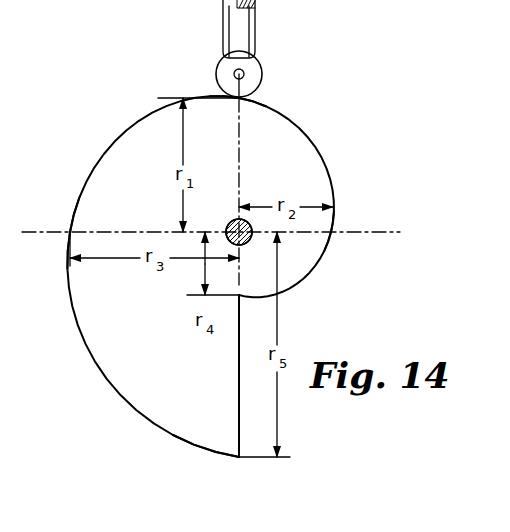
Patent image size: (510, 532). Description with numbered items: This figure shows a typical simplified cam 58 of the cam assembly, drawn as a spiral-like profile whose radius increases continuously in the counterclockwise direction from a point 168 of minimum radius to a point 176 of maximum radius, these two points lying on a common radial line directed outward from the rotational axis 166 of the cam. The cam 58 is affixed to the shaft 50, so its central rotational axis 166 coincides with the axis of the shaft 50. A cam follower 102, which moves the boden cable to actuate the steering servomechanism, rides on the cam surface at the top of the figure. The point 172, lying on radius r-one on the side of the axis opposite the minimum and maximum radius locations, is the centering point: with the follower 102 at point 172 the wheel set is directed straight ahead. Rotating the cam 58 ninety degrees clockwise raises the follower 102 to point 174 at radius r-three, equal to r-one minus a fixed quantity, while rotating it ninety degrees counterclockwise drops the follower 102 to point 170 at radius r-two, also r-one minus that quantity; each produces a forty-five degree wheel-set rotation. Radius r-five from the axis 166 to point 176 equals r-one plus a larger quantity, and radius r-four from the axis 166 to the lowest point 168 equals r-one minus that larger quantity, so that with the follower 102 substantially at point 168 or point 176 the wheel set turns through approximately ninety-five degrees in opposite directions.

The shaft 50 is at (248, 243).
The cam 58 is at (318, 140).
The cam follower 102 is at (243, 40).
The rotational axis 166 is at (226, 233).
The point of minimum radius 168 is at (243, 298).
The point on cam surface 170 is at (331, 236).
The centering point 172 is at (257, 101).
The point on cam surface 174 is at (70, 231).
The point of maximum radius 176 is at (238, 460).